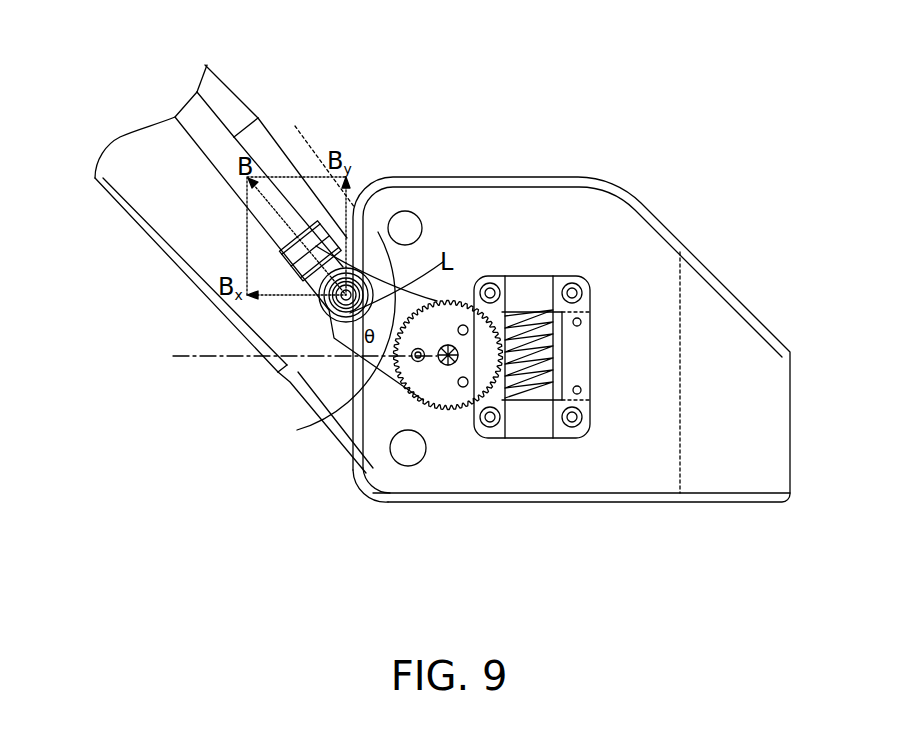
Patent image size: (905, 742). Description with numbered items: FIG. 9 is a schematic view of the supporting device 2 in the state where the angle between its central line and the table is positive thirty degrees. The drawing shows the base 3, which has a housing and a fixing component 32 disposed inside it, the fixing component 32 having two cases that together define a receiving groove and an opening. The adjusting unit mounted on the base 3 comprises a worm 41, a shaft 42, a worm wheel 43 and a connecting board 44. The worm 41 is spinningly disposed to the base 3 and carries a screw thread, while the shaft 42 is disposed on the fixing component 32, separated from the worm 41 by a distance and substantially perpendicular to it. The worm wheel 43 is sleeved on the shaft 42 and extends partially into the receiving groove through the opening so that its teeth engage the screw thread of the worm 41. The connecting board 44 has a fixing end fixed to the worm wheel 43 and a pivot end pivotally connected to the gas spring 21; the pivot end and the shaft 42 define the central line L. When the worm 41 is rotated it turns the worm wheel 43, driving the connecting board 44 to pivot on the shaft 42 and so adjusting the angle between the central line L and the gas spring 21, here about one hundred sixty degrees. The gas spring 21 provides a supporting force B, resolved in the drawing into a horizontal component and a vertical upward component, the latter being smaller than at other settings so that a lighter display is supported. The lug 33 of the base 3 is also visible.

The supporting device 2 is at (226, 98).
The gas spring 21 is at (247, 124).
The base 3 is at (429, 198).
The fixing component 32 is at (583, 338).
The bracket mounting lug 33 is at (362, 485).
The worm 41 is at (525, 283).
The shaft 42 is at (448, 365).
The worm wheel 43 is at (418, 412).
The connecting board 44 is at (333, 338).